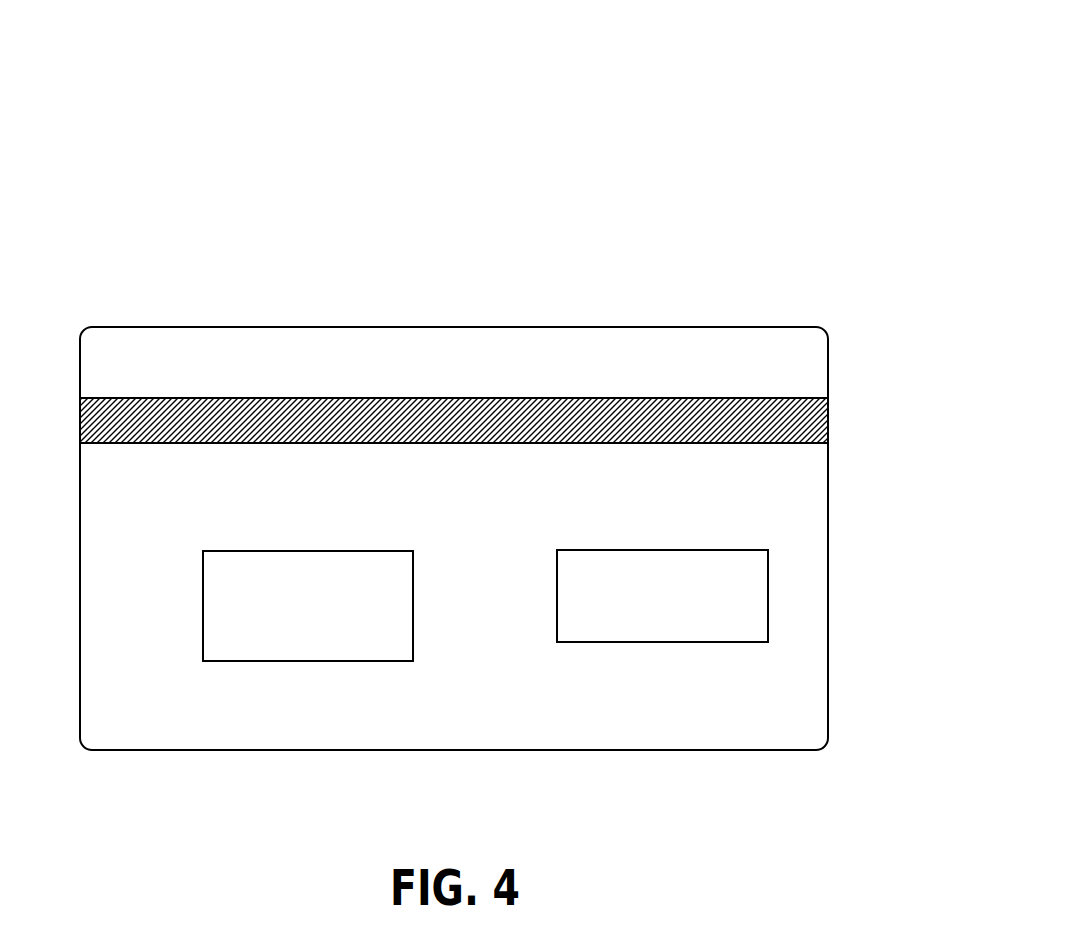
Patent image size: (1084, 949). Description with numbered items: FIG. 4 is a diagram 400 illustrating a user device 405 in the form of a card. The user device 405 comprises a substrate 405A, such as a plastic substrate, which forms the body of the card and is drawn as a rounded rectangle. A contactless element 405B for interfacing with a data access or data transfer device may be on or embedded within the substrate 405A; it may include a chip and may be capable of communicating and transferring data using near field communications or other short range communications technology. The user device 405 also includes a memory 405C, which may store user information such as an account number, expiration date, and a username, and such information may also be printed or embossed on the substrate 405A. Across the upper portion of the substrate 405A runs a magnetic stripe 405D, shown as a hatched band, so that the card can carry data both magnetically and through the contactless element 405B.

The user device diagram 400 is at (600, 91).
The user device 405 is at (332, 252).
The substrate 405A is at (193, 327).
The contactless element 405B is at (333, 644).
The memory 405C is at (687, 622).
The magnetic stripe 405D is at (503, 397).